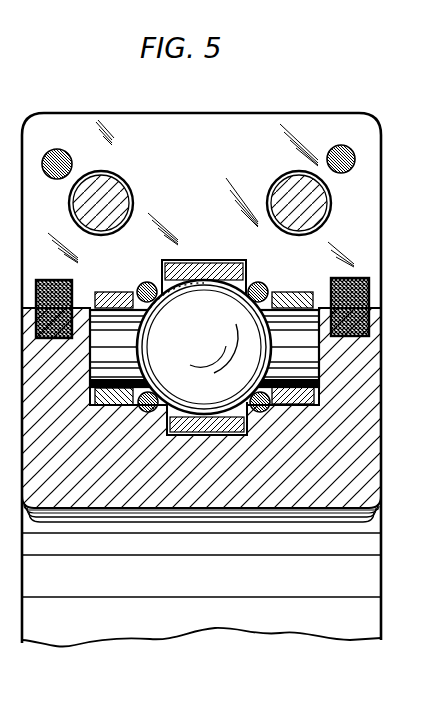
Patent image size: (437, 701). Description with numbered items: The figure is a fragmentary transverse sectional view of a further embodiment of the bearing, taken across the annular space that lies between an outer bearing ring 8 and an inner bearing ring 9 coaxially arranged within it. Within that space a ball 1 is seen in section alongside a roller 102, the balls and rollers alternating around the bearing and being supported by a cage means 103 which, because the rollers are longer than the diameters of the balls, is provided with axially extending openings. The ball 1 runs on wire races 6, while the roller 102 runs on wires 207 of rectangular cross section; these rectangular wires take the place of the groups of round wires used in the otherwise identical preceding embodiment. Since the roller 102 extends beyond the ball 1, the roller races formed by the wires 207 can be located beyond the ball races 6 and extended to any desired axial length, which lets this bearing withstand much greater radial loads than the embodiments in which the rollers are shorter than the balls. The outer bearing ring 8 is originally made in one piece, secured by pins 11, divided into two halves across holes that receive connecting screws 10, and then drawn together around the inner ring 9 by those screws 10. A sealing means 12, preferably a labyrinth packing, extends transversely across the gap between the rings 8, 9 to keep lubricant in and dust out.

The ball 1 is at (171, 334).
The wire race 6 is at (146, 283).
The outer bearing ring 8 is at (368, 230).
The inner bearing ring 9 is at (370, 432).
The connecting screw 10 is at (320, 212).
The pin 11 is at (350, 160).
The sealing means 12 is at (365, 298).
The roller 102 is at (306, 340).
The cage means 103 is at (244, 267).
The wire of rectangular cross section 207 is at (300, 295).